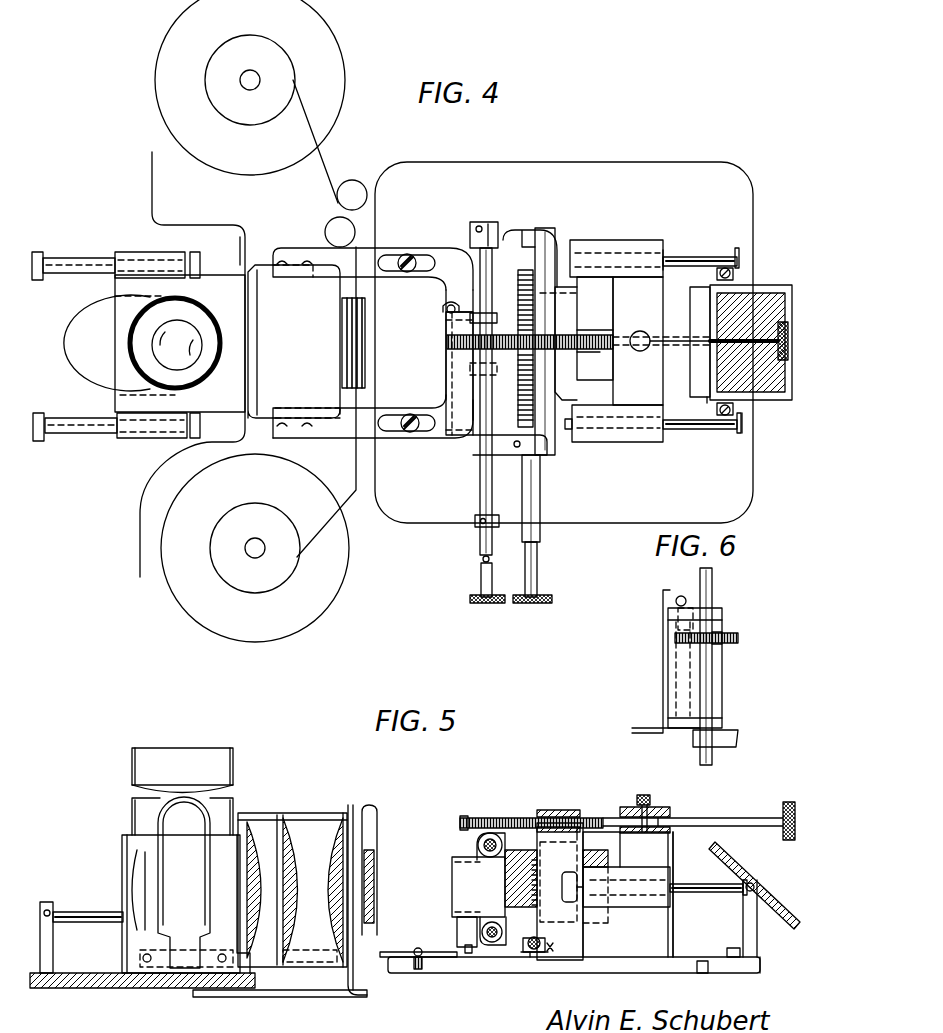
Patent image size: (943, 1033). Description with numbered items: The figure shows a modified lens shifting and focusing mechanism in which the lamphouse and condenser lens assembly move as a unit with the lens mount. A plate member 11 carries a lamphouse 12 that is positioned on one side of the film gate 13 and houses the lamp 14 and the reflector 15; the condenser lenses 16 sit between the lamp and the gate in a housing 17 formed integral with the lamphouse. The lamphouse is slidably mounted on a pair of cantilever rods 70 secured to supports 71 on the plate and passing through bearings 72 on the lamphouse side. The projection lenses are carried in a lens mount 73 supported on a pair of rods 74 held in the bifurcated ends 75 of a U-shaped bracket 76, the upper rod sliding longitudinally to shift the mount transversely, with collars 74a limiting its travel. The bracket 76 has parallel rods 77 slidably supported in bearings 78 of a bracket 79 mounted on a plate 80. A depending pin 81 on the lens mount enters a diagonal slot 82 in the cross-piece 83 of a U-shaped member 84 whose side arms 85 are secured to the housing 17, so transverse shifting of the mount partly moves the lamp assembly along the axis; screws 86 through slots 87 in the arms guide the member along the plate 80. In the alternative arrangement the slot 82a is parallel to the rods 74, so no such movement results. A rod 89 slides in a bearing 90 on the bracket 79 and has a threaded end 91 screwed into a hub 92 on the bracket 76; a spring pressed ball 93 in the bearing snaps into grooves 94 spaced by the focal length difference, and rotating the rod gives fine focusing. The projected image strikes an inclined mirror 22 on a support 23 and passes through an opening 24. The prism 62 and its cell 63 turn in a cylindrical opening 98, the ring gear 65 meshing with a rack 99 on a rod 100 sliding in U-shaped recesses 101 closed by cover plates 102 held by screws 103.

In FIG. 4, the plate member 11 is at (192, 364).
In FIG. 5, the plate member 11 is at (172, 988).
In FIG. 4, the lamphouse 12 is at (122, 400).
In FIG. 5, the lamphouse 12 is at (122, 975).
In FIG. 4, the film gate 13 is at (345, 331).
In FIG. 5, the film gate 13 is at (360, 997).
In FIG. 4, the lamp 14 is at (155, 343).
In FIG. 5, the lamp 14 is at (178, 818).
In FIG. 4, the reflector 15 is at (128, 330).
In FIG. 5, the reflector 15 is at (143, 862).
In FIG. 5, the condenser lenses 16 is at (302, 815).
In FIG. 4, the condenser lens housing 17 is at (258, 272).
In FIG. 5, the condenser lens housing 17 is at (293, 968).
In FIG. 4, the inclined mirror 22 is at (773, 390).
In FIG. 5, the inclined mirror 22 is at (760, 886).
In FIG. 4, the mirror support 23 is at (755, 434).
In FIG. 5, the mirror support 23 is at (757, 937).
In FIG. 4, the opening 24 is at (698, 372).
In FIG. 5, the opening 24 is at (703, 973).
In FIG. 4, the prism 62 is at (585, 330).
In FIG. 5, the prism 62 is at (597, 852).
In FIG. 4, the prism cell 63 is at (578, 290).
In FIG. 4, the ring gear 65 is at (542, 420).
In FIG. 5, the ring gear 65 is at (537, 903).
In FIG. 4, the cantilever rods 70 is at (82, 258).
In FIG. 5, the cantilever rods 70 is at (87, 912).
In FIG. 4, the supports 71 is at (38, 252).
In FIG. 5, the supports 71 is at (47, 902).
In FIG. 4, the bearings 72 is at (136, 252).
In FIG. 5, the bearings 72 is at (138, 932).
In FIG. 4, the lens mount 73 is at (455, 434).
In FIG. 6, the lens mount 73 is at (668, 661).
In FIG. 5, the lens mount 73 is at (478, 870).
In FIG. 4, the rods 74 is at (480, 541).
In FIG. 6, the rods 74 is at (713, 582).
In FIG. 5, the rods 74 is at (490, 833).
In FIG. 4, the collars 74a is at (478, 222).
In FIG. 4, the bifurcated ends 75 is at (507, 237).
In FIG. 6, the bifurcated ends 75 is at (730, 736).
In FIG. 5, the bifurcated ends 75 is at (518, 837).
In FIG. 4, the U-shaped bracket 76 is at (572, 428).
In FIG. 5, the U-shaped bracket 76 is at (567, 907).
In FIG. 4, the longitudinally extending rods 77 is at (697, 257).
In FIG. 5, the longitudinally extending rods 77 is at (715, 893).
In FIG. 4, the bearings 78 is at (648, 245).
In FIG. 5, the bearings 78 is at (657, 905).
In FIG. 4, the bracket 79 is at (660, 445).
In FIG. 5, the bracket 79 is at (690, 938).
In FIG. 4, the plate 80 is at (728, 178).
In FIG. 5, the plate 80 is at (760, 965).
In FIG. 4, the depending pin 81 is at (446, 355).
In FIG. 6, the depending pin 81 is at (678, 618).
In FIG. 5, the depending pin 81 is at (467, 950).
In FIG. 4, the diagonal slot 82 is at (445, 305).
In FIG. 6, the slot 82a is at (676, 601).
In FIG. 4, the cross-piece 83 is at (446, 342).
In FIG. 6, the cross-piece 83 is at (675, 639).
In FIG. 5, the cross-piece 83 is at (531, 823).
In FIG. 4, the U-shaped member 84 is at (392, 438).
In FIG. 5, the U-shaped member 84 is at (393, 952).
In FIG. 4, the side arms 85 is at (322, 258).
In FIG. 6, the side arms 85 is at (656, 712).
In FIG. 4, the screws 86 is at (407, 254).
In FIG. 5, the screws 86 is at (423, 950).
In FIG. 4, the slots 87 is at (430, 263).
In FIG. 4, the rod 89 is at (745, 340).
In FIG. 5, the rod 89 is at (740, 818).
In FIG. 4, the bearing 90 is at (650, 332).
In FIG. 5, the bearing 90 is at (660, 813).
In FIG. 4, the threaded end 91 is at (468, 318).
In FIG. 6, the threaded end 91 is at (720, 633).
In FIG. 5, the threaded end 91 is at (462, 818).
In FIG. 4, the hub 92 is at (573, 352).
In FIG. 5, the hub 92 is at (556, 811).
In FIG. 5, the spring pressed ball 93 is at (655, 808).
In FIG. 5, the grooves 94 is at (655, 828).
In FIG. 4, the cylindrical opening 98 is at (560, 292).
In FIG. 5, the cylindrical opening 98 is at (580, 812).
In FIG. 4, the rack 99 is at (518, 272).
In FIG. 4, the rod 100 is at (535, 572).
In FIG. 5, the rod 100 is at (533, 956).
In FIG. 5, the U-shaped recesses 101 is at (517, 944).
In FIG. 5, the cover plates 102 is at (551, 948).
In FIG. 5, the screws 103 is at (543, 954).